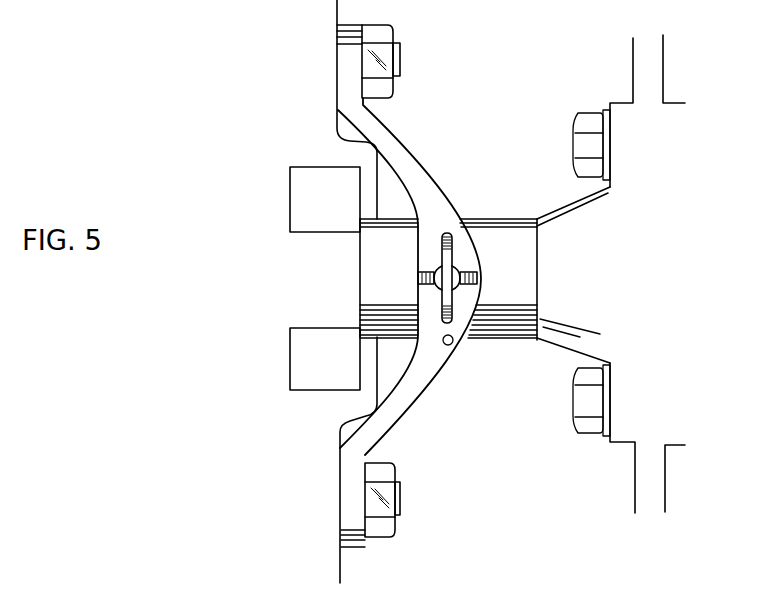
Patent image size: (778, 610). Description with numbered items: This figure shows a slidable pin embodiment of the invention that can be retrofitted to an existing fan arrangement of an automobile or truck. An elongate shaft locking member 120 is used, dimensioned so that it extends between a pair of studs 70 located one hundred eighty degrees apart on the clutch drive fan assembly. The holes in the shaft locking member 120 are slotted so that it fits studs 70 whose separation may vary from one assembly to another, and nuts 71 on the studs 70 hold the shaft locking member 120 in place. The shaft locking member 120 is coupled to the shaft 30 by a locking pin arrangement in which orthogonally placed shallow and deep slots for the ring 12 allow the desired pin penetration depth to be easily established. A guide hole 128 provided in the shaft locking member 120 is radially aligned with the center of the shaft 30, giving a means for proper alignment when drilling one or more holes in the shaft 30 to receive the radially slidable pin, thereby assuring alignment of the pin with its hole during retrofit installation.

The elongate shaft locking member 120 is at (409, 156).
The shaft 30 is at (497, 240).
The ring 12 is at (447, 256).
The guide hole 128 is at (455, 343).
The stud 70 is at (398, 504).
The nut 71 is at (381, 531).